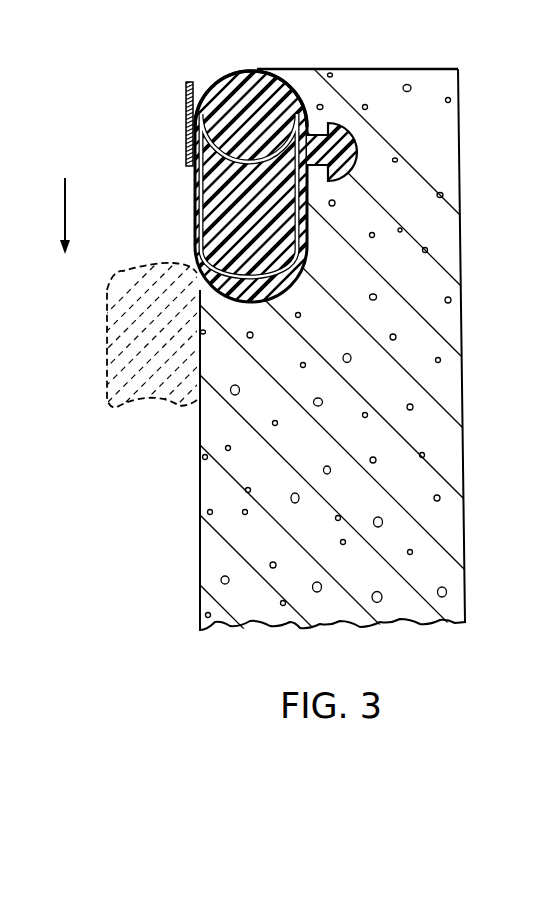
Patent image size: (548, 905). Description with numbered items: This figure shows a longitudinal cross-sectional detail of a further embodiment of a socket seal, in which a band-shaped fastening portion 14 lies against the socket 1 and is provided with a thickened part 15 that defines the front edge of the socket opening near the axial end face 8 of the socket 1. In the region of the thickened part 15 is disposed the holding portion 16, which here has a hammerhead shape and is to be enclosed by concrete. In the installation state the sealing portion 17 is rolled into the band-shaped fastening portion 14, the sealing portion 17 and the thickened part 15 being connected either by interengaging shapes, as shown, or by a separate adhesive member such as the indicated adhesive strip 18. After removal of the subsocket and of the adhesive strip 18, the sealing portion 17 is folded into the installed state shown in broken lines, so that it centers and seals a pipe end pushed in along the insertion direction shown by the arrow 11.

The concrete block / body 1 is at (458, 378).
The top surface of block 8 is at (410, 67).
The direction of movement arrow 11 is at (60, 205).
The liner / sleeve 14 is at (333, 252).
The spherical head of insert 15 is at (255, 88).
The anchoring projection 16 is at (344, 151).
The insert body 17 is at (222, 204).
The sealing strip 18 is at (188, 110).